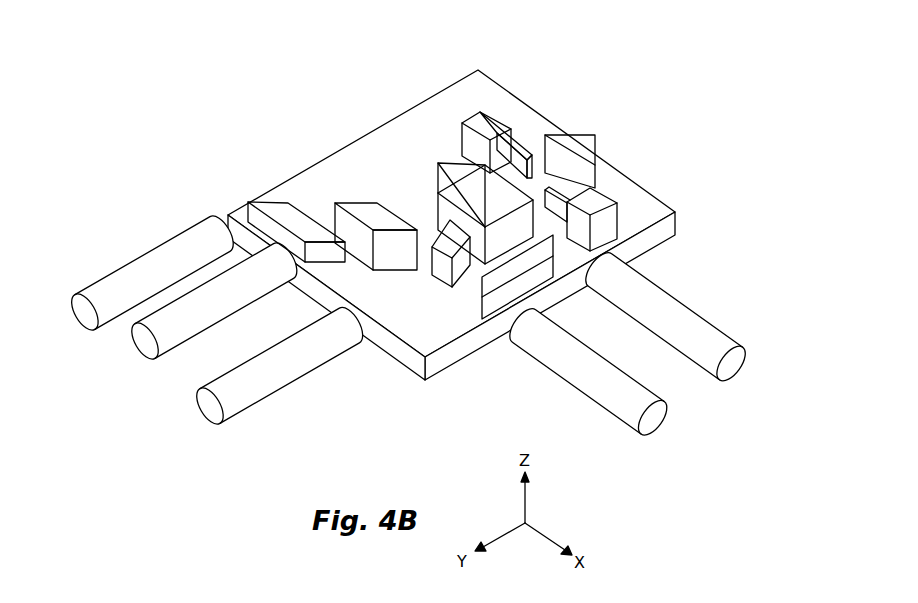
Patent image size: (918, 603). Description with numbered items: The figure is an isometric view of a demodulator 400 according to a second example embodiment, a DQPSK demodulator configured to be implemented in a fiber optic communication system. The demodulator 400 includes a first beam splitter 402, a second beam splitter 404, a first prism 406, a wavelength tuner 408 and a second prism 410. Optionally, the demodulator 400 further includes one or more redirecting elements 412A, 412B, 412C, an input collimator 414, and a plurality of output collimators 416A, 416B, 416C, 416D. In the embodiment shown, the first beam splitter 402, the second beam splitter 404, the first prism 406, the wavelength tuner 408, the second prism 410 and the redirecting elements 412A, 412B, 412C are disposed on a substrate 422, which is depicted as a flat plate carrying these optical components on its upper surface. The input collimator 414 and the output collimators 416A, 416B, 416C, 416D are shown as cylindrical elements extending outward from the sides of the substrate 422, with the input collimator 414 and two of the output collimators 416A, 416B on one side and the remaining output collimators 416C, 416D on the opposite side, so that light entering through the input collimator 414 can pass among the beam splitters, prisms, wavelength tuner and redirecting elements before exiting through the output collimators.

The demodulator 400 is at (423, 260).
The first beam splitter 402 is at (436, 277).
The second beam splitter 404 is at (443, 213).
The first prism 406 is at (437, 165).
The wavelength tuner 408 is at (461, 110).
The second prism 410 is at (577, 133).
The redirecting element 412A is at (300, 197).
The redirecting element 412B is at (357, 202).
The redirecting element 412C is at (497, 300).
The input collimator 414 is at (252, 410).
The output collimator 416A is at (122, 267).
The output collimator 416B is at (177, 350).
The output collimator 416C is at (617, 440).
The output collimator 416D is at (710, 325).
The substrate 422 is at (658, 202).